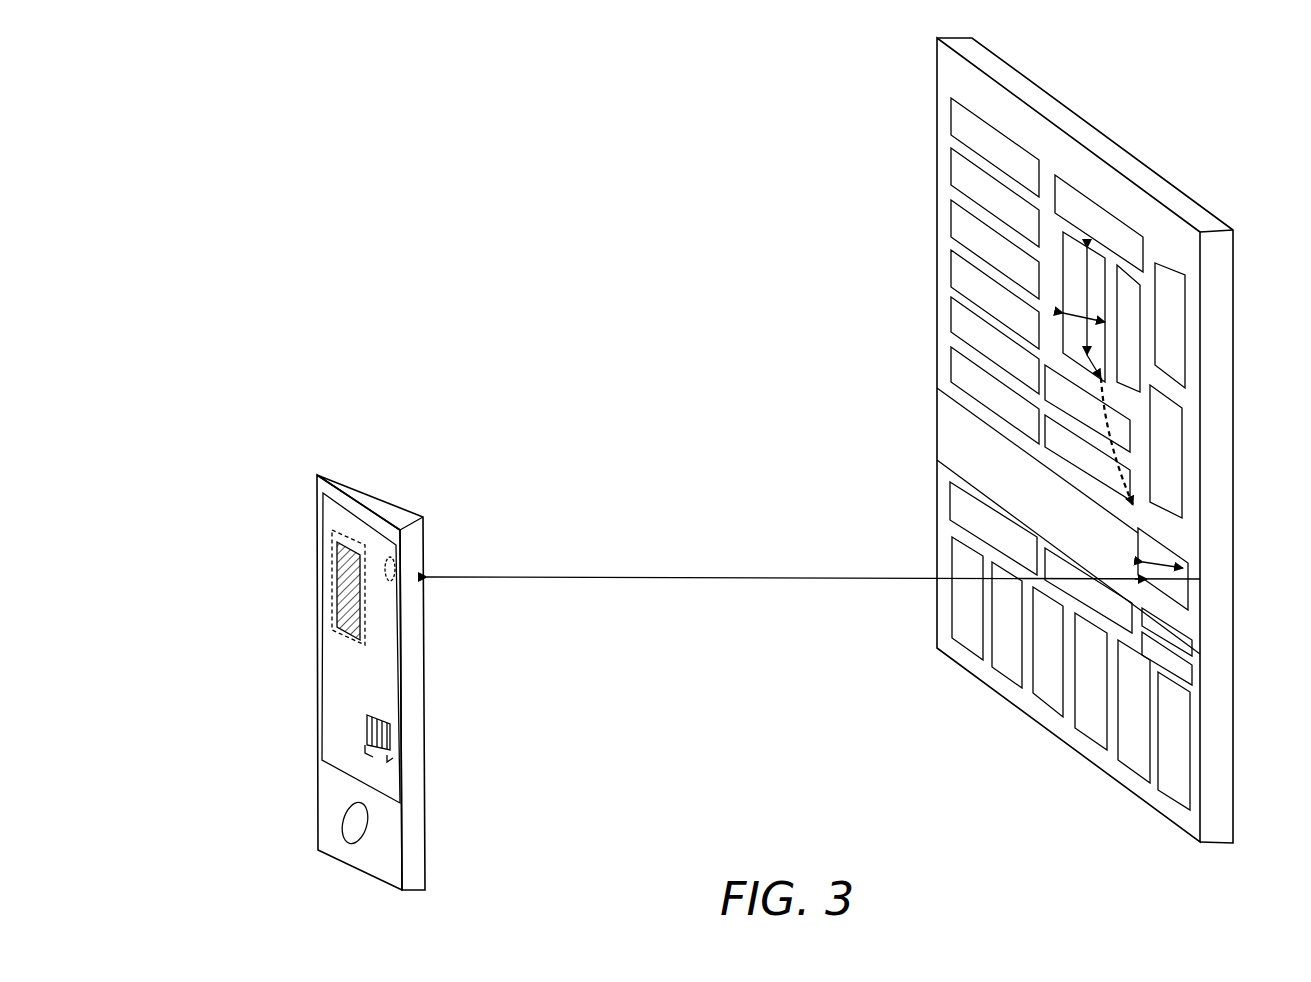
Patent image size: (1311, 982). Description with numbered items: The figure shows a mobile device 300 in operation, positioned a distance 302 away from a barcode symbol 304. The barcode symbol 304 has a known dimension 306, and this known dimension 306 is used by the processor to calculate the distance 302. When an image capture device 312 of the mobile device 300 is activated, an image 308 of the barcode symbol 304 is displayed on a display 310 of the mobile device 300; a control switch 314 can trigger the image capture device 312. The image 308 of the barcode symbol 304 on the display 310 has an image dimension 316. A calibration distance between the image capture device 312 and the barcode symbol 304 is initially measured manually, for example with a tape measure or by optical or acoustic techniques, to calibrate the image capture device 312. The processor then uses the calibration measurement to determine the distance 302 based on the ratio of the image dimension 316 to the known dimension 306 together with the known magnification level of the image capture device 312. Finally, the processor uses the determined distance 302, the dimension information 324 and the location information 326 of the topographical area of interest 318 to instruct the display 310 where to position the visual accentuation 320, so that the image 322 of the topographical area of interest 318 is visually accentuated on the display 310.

The mobile device 300 is at (400, 508).
The distance 302 is at (745, 576).
The barcode symbol 304 is at (1195, 582).
The known dimension 306 is at (1152, 560).
The image of the barcode symbol 308 is at (395, 739).
The display 310 is at (330, 740).
The image capture device 312 is at (395, 565).
The control switch 314 is at (366, 822).
The image dimension 316 is at (372, 757).
The topographical area of interest 318 is at (1065, 300).
The visual accentuation 320 is at (343, 636).
The image of the topographical area of interest 322 is at (340, 578).
The dimension information 324 is at (1090, 280).
The location information 326 is at (1112, 432).